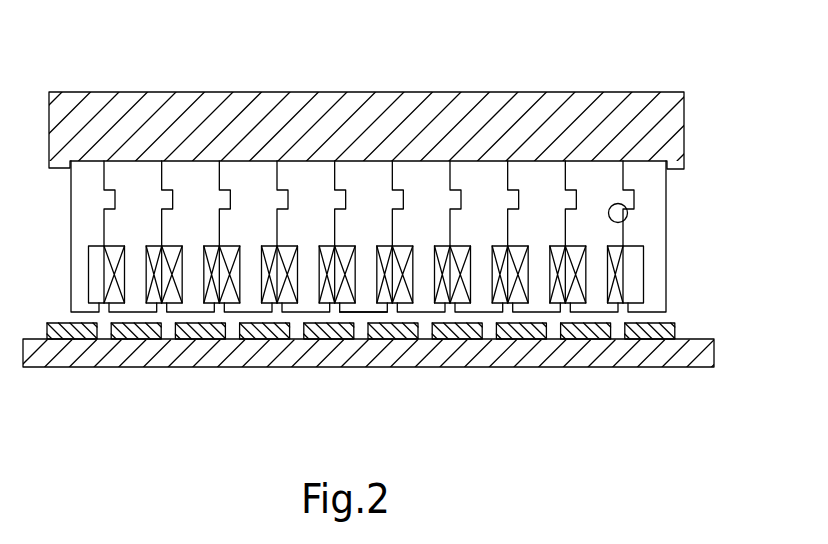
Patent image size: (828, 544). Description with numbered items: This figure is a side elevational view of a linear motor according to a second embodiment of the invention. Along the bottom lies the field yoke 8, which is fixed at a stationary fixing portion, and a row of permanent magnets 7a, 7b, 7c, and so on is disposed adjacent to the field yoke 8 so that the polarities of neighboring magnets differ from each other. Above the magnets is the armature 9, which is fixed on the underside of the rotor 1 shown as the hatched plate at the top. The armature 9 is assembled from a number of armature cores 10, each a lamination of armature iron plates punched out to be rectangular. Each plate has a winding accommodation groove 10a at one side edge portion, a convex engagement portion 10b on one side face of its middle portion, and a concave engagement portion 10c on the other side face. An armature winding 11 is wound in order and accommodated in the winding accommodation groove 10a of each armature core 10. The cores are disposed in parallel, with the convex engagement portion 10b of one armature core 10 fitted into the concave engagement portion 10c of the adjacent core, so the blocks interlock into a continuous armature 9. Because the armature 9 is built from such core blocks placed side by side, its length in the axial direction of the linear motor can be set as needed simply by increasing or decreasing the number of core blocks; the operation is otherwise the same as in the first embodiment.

The rotor 1 is at (121, 108).
The armature 9 is at (297, 175).
The armature core 10 is at (477, 188).
The winding accommodation groove 10a is at (435, 253).
The convex engagement portion 10b is at (623, 231).
The concave engagement portion 10c is at (636, 200).
The armature winding 11 is at (375, 306).
The permanent magnet 7a is at (600, 335).
The permanent magnet 7b is at (517, 335).
The permanent magnet 7c is at (462, 333).
The field yoke 8 is at (168, 360).